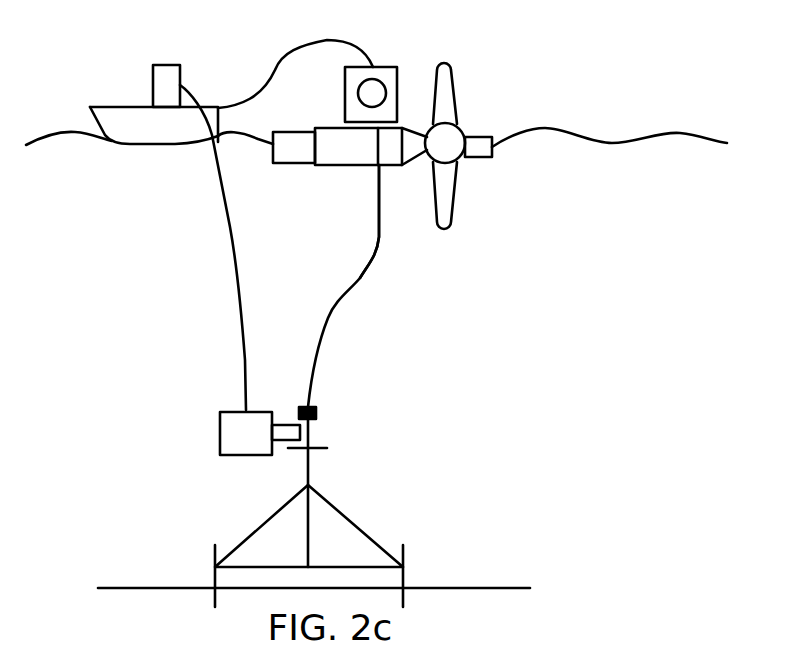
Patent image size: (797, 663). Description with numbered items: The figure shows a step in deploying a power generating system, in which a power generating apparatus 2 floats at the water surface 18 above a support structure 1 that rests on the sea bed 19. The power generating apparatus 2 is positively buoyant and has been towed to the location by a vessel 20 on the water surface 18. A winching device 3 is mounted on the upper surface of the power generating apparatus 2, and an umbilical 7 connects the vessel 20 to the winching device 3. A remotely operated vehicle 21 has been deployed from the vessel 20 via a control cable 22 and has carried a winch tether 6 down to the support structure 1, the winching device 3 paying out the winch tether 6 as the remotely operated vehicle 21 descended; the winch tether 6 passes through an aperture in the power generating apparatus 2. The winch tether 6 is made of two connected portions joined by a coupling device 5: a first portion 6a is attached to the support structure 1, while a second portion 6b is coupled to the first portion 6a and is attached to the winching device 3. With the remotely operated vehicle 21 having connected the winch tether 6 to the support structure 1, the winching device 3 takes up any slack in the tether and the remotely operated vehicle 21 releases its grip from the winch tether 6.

The support structure 1 is at (382, 542).
The power generating apparatus 2 is at (343, 167).
The winching device 3 is at (345, 95).
The coupling device 5 is at (317, 413).
The winch tether 6 is at (325, 337).
The first portion of the tether 6a is at (309, 428).
The second portion of the tether 6b is at (373, 265).
The umbilical 7 is at (375, 53).
The water surface 18 is at (552, 130).
The sea bed 19 is at (488, 586).
The vessel 20 is at (133, 117).
The remotely operated vehicle 21 is at (237, 428).
The control cable 22 is at (236, 289).